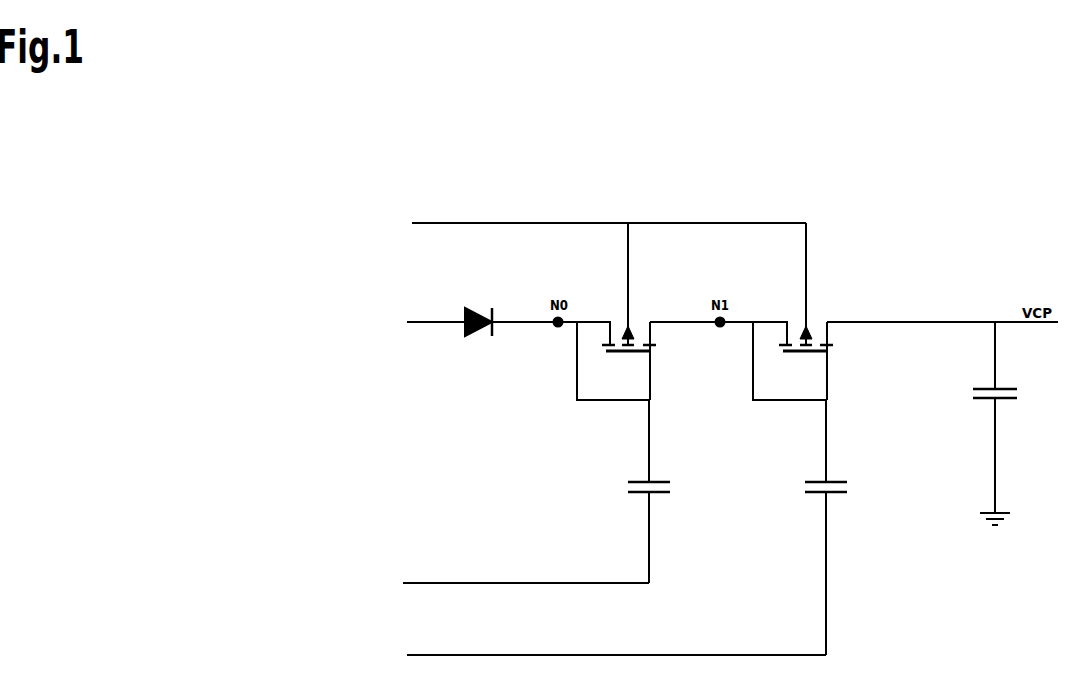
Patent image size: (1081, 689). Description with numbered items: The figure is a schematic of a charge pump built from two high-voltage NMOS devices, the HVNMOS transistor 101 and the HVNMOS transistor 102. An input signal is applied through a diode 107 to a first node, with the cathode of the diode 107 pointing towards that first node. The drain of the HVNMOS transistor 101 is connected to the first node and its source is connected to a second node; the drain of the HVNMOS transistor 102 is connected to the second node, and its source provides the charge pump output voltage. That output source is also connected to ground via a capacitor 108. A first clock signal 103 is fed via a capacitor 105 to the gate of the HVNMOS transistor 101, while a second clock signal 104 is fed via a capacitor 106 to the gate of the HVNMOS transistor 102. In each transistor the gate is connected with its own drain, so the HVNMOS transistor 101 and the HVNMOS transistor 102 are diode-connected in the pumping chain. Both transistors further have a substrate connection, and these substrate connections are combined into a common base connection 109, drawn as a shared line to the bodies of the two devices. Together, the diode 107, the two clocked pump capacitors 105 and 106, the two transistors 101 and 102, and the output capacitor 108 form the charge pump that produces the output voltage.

The HVNMOS transistor 101 is at (653, 311).
The HVNMOS transistor 102 is at (830, 311).
The clock signal 103 is at (515, 567).
The clock signal 104 is at (605, 639).
The capacitor 105 is at (619, 491).
The capacitor 106 is at (795, 527).
The diode 107 is at (492, 339).
The capacitor 108 is at (1014, 423).
The common base connection 109 is at (609, 207).